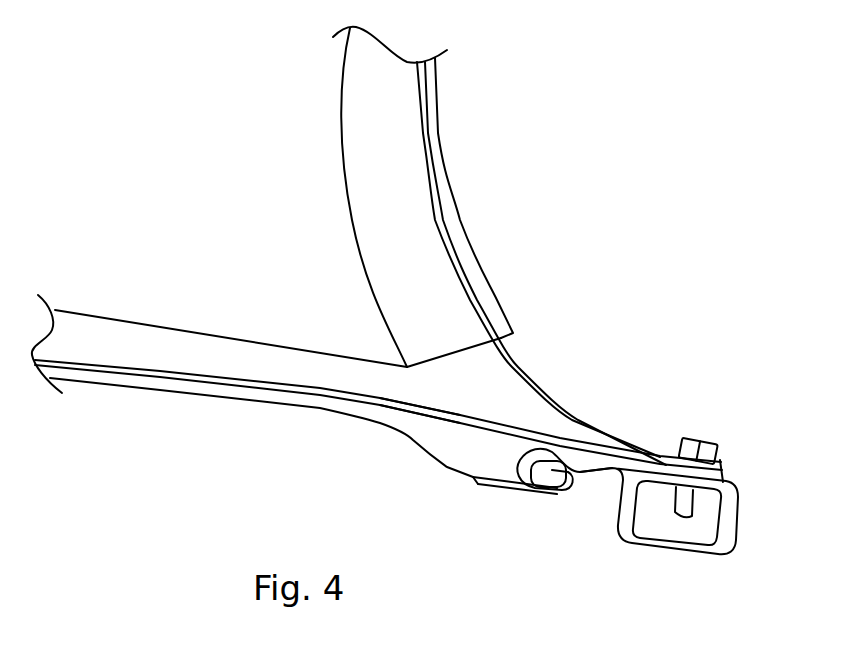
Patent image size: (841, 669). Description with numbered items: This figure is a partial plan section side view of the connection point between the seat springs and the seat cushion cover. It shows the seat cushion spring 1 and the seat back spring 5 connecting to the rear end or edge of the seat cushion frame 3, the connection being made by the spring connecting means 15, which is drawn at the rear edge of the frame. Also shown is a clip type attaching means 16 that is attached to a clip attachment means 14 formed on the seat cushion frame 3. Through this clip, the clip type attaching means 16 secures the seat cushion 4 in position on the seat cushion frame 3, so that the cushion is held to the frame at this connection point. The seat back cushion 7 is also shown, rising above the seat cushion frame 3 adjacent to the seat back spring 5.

The seat cushion spring 1 is at (483, 418).
The seat cushion frame 3 is at (673, 550).
The seat cushion 4 is at (152, 333).
The seat back spring 5 is at (520, 365).
The seat back cushion 7 is at (365, 177).
The clip attachment means 14 is at (517, 465).
The spring connecting means 15 is at (707, 443).
The clip type attaching means 16 is at (545, 493).